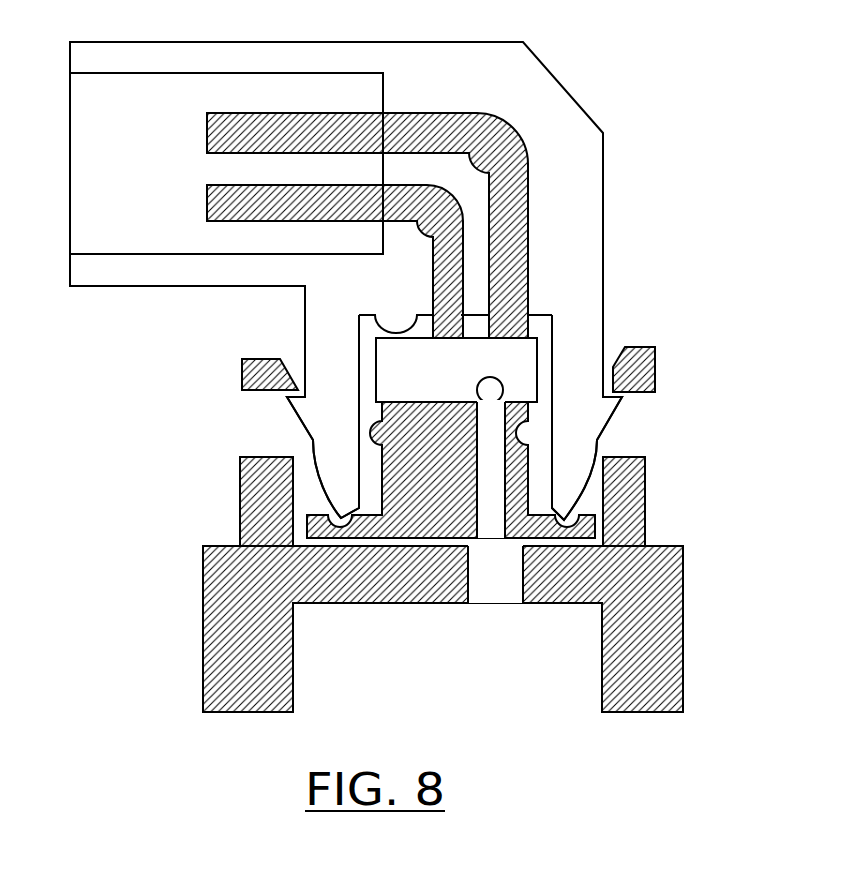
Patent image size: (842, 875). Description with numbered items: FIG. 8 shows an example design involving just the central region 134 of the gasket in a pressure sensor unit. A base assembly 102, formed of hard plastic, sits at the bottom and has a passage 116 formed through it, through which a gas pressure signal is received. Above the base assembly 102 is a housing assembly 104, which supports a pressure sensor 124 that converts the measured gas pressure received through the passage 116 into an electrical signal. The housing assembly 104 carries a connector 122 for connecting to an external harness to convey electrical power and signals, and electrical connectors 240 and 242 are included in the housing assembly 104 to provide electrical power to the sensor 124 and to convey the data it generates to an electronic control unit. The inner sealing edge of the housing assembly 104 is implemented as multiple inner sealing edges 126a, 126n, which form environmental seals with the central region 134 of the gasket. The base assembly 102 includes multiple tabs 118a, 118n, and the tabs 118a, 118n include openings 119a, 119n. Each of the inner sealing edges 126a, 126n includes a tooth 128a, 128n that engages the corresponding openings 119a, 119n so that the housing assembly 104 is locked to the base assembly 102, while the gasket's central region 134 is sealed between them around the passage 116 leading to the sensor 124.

The base assembly 102 is at (203, 607).
The housing assembly 104 is at (604, 182).
The passage 116 is at (488, 604).
The tab 118a is at (238, 515).
The tab 118n is at (647, 515).
The opening 119a is at (255, 435).
The opening 119n is at (628, 435).
The connector 122 is at (182, 42).
The pressure sensor 124 is at (450, 381).
The inner sealing edge 126a is at (305, 333).
The inner sealing edge 126n is at (604, 325).
The tooth 128a is at (290, 400).
The tooth 128n is at (622, 400).
The central region 134 is at (450, 472).
The electrical connector 240 is at (207, 137).
The electrical connector 242 is at (207, 205).